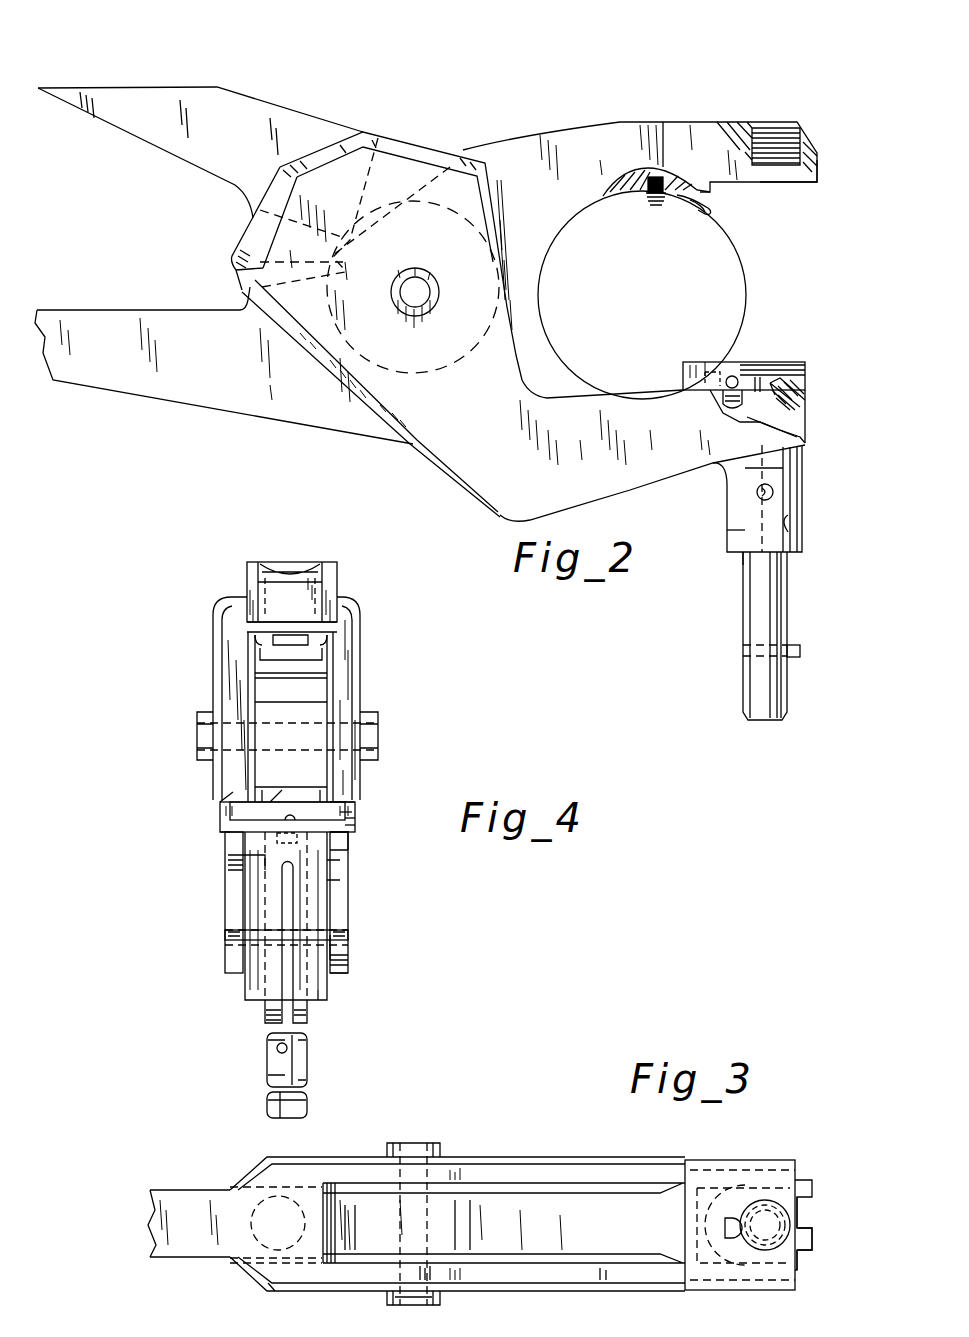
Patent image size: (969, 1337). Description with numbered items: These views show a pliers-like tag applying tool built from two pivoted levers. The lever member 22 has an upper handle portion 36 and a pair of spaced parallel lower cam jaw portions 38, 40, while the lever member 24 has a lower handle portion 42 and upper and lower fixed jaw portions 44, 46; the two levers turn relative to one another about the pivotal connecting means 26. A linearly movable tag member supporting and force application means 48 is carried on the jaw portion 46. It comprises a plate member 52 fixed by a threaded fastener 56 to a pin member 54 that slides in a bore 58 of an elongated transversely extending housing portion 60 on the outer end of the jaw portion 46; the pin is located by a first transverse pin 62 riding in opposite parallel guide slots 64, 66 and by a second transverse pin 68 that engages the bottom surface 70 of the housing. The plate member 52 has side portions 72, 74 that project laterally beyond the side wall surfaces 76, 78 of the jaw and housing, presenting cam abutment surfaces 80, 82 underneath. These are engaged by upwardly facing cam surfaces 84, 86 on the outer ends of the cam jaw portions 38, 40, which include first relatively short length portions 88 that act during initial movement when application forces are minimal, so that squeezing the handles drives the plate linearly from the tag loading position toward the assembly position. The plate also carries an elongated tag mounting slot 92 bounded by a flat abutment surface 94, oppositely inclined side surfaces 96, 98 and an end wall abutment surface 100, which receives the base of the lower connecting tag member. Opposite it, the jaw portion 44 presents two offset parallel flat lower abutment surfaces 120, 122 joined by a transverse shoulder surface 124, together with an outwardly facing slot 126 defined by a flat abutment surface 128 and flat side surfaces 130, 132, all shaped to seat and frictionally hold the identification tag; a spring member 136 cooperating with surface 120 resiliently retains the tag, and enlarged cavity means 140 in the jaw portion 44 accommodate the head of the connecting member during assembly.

In FIG. 2, the lever member 22 is at (368, 132).
In FIG. 2, the lever member 24 is at (352, 425).
In FIG. 2, the pivotal connecting means 26 is at (440, 293).
In FIG. 4, the pivotal connecting means 26 is at (196, 730).
In FIG. 3, the pivotal connecting means 26 is at (405, 1142).
In FIG. 2, the upper handle portion 36 is at (146, 88).
In FIG. 3, the upper handle portion 36 is at (170, 1190).
In FIG. 3, the lower cam jaw portion 38 is at (535, 1157).
In FIG. 2, the lower cam jaw portion 40 is at (600, 496).
In FIG. 4, the lower cam jaw portion 40 is at (215, 656).
In FIG. 3, the lower cam jaw portion 40 is at (603, 1292).
In FIG. 2, the lower handle portion 42 is at (172, 396).
In FIG. 2, the upper jaw portion 44 is at (556, 130).
In FIG. 4, the upper jaw portion 44 is at (338, 570).
In FIG. 3, the upper jaw portion 44 is at (600, 1203).
In FIG. 2, the lower jaw portion 46 is at (562, 333).
In FIG. 4, the lower jaw portion 46 is at (313, 705).
In FIG. 2, the tag member supporting and force application means 48 is at (805, 378).
In FIG. 4, the tag member supporting and force application means 48 is at (352, 840).
In FIG. 2, the plate member 52 is at (792, 362).
In FIG. 4, the plate member 52 is at (352, 806).
In FIG. 2, the pin member 54 is at (788, 600).
In FIG. 4, the pin member 54 is at (265, 1012).
In FIG. 2, the threaded fastener 56 is at (755, 380).
In FIG. 2, the bore 58 is at (804, 526).
In FIG. 4, the bore 58 is at (240, 860).
In FIG. 2, the housing portion 60 is at (740, 532).
In FIG. 4, the housing portion 60 is at (322, 1000).
In FIG. 2, the first transverse pin 62 is at (773, 493).
In FIG. 4, the first transverse pin 62 is at (228, 935).
In FIG. 2, the guide slot 64 is at (757, 477).
In FIG. 4, the guide slot 64 is at (233, 918).
In FIG. 4, the guide slot 66 is at (348, 957).
In FIG. 2, the second transverse pin 68 is at (801, 652).
In FIG. 4, the second transverse pin 68 is at (280, 1050).
In FIG. 2, the bottom surface 70 is at (745, 562).
In FIG. 4, the side portion 72 is at (228, 812).
In FIG. 4, the side portion 74 is at (352, 820).
In FIG. 4, the side wall surface 76 is at (245, 882).
In FIG. 4, the side wall surface 78 is at (345, 915).
In FIG. 2, the cam abutment surface 80 is at (806, 396).
In FIG. 4, the cam abutment surface 80 is at (227, 836).
In FIG. 4, the cam abutment surface 82 is at (330, 875).
In FIG. 2, the cam surface 84 is at (806, 420).
In FIG. 4, the cam surface 84 is at (223, 808).
In FIG. 4, the cam surface 86 is at (352, 828).
In FIG. 2, the first relatively short length portion 88 is at (688, 392).
In FIG. 4, the tag mounting slot 92 is at (270, 800).
In FIG. 4, the flat abutment surface 94 is at (352, 812).
In FIG. 4, the inclined side surface 96 is at (275, 802).
In FIG. 4, the inclined side surface 98 is at (324, 800).
In FIG. 2, the end wall abutment surface 100 is at (716, 362).
In FIG. 2, the lower abutment surface 120 is at (720, 207).
In FIG. 2, the lower abutment surface 122 is at (802, 184).
In FIG. 2, the transverse shoulder surface 124 is at (703, 194).
In FIG. 3, the outwardly facing slot 126 is at (812, 1220).
In FIG. 3, the flat abutment surface 128 is at (813, 1238).
In FIG. 3, the flat side surface 130 is at (812, 1198).
In FIG. 3, the flat side surface 132 is at (812, 1255).
In FIG. 2, the spring member 136 is at (700, 216).
In FIG. 2, the cavity means 140 is at (767, 130).
In FIG. 3, the cavity means 140 is at (772, 1198).